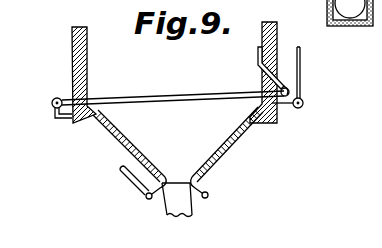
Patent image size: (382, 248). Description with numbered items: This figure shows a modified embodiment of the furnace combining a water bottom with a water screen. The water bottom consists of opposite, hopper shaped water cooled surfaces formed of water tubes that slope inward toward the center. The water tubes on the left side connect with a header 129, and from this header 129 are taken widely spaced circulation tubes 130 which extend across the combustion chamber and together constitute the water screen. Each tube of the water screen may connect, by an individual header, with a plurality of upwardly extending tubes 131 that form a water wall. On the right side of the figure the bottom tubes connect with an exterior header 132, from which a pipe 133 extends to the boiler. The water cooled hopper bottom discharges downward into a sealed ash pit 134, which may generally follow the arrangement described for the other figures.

The header 129 is at (58, 98).
The circulation tubes 130 is at (170, 100).
The upwardly extending tubes 131 is at (257, 47).
The exterior header 132 is at (303, 103).
The pipe 133 is at (301, 66).
The sealed ash pit 134 is at (176, 192).